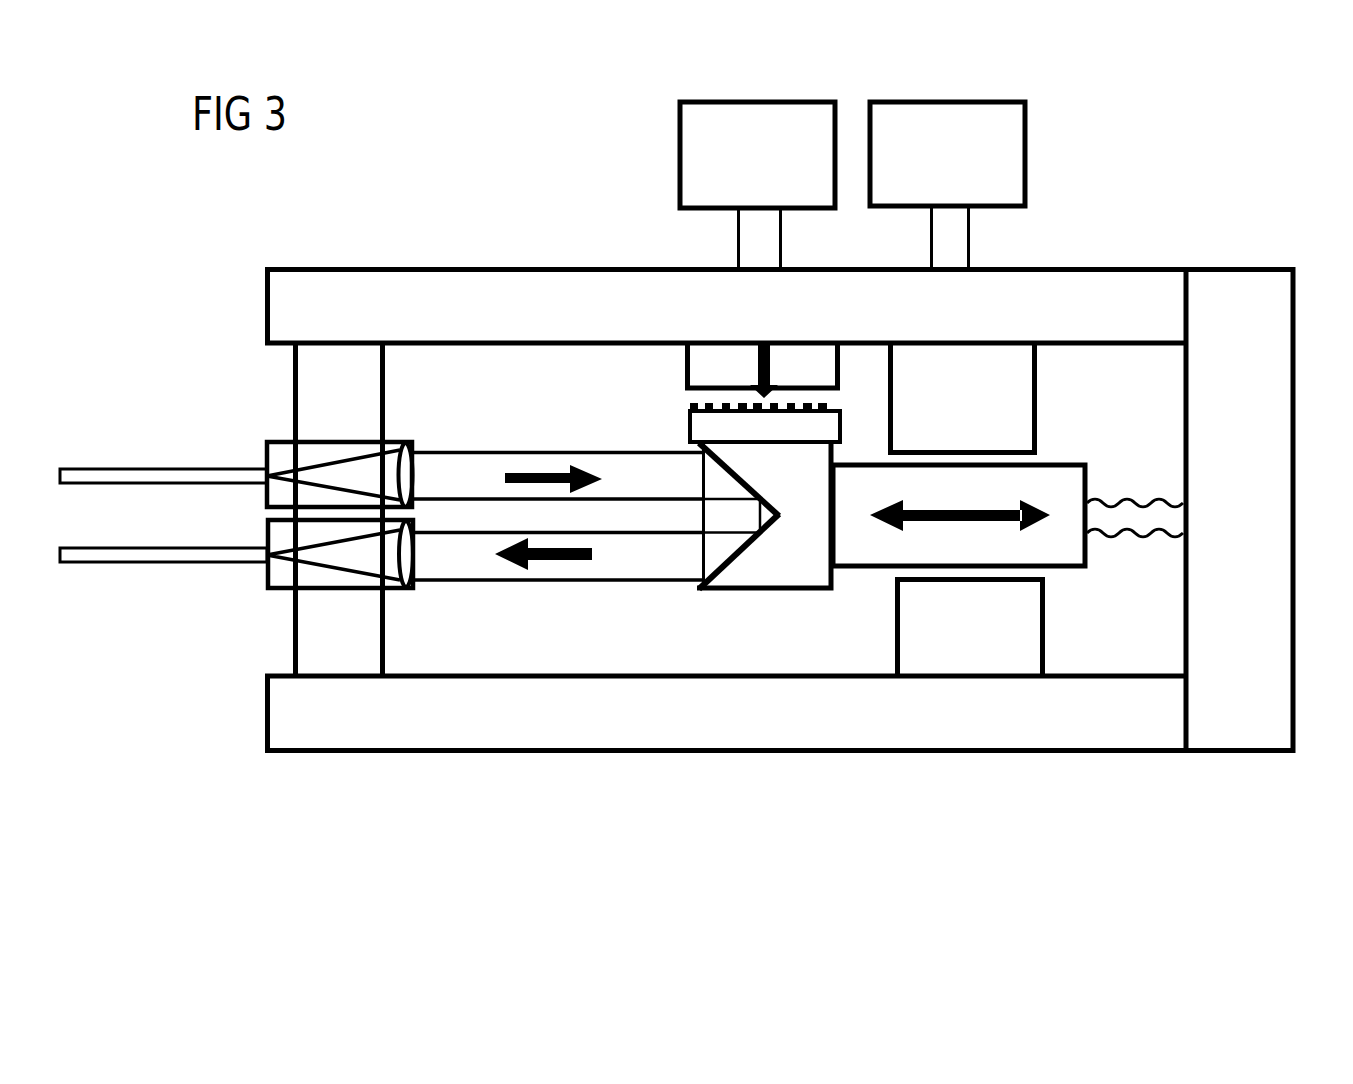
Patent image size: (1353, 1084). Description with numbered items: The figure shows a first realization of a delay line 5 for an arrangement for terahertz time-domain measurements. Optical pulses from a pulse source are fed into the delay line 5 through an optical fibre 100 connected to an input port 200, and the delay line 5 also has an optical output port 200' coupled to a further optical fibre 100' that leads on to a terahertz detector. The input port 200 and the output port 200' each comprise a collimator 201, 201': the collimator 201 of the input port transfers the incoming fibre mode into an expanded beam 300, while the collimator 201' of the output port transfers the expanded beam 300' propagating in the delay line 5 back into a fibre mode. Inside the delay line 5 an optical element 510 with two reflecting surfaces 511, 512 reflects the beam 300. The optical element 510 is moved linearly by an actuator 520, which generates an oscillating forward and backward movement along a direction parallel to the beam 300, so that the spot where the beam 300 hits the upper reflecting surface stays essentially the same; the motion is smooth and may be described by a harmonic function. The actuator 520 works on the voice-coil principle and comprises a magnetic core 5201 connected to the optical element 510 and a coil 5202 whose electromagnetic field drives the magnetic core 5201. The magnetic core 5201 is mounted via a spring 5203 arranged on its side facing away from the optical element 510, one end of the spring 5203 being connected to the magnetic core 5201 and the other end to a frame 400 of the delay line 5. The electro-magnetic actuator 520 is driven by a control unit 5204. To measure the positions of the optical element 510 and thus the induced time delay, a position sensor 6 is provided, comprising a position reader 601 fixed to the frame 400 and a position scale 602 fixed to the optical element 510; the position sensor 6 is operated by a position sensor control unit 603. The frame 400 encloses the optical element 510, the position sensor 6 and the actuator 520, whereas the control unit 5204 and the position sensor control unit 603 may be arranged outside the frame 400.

The delay line 5 is at (450, 225).
The position sensor 6 is at (726, 272).
The optical fibre 100 is at (163, 444).
The optical fibre 100' is at (163, 587).
The input port 200 is at (324, 445).
The optical output port 200' is at (314, 581).
The collimator 201 is at (413, 445).
The collimator 201' is at (412, 582).
The expanded beam 300 is at (586, 467).
The expanded beam 300' is at (586, 588).
The frame 400 is at (305, 383).
The optical element 510 is at (765, 548).
The reflecting surface 511 is at (738, 473).
The reflecting surface 512 is at (765, 538).
The actuator 520 is at (1008, 510).
The magnetic core 5201 is at (1015, 545).
The coil 5202 is at (1012, 382).
The spring 5203 is at (1115, 513).
The control unit 5204 is at (1008, 160).
The position reader 601 is at (705, 373).
The position scale 602 is at (702, 425).
The position sensor control unit 603 is at (698, 158).